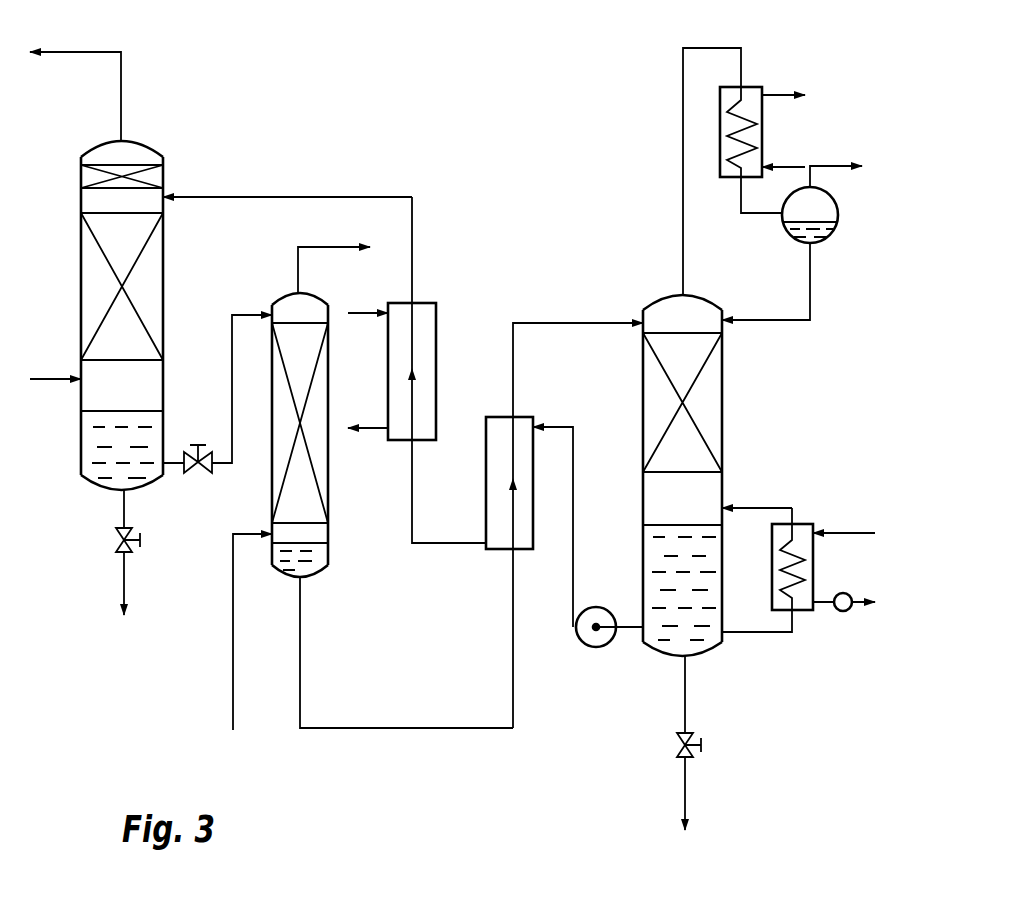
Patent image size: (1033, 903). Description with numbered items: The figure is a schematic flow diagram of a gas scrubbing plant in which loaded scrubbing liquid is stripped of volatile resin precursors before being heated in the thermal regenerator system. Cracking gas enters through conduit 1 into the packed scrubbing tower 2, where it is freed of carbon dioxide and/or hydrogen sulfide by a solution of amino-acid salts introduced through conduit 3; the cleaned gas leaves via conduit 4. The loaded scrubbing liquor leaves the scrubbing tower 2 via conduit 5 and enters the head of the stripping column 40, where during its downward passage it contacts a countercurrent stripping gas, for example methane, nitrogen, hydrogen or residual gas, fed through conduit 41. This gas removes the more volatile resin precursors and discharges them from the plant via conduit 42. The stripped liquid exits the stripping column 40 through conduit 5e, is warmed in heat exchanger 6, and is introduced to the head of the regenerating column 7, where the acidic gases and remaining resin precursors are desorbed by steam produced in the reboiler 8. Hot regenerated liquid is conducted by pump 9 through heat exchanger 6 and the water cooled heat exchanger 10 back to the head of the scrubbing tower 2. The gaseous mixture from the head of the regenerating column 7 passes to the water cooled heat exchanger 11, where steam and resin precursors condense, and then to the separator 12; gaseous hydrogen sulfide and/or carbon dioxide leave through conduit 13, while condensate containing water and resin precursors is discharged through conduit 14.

The conduit 1 is at (50, 380).
The scrubbing tower 2 is at (163, 268).
The conduit 3 is at (283, 197).
The conduit 4 is at (80, 52).
The conduit 5 is at (232, 386).
The conduit 5e is at (407, 730).
The heat exchanger 6 is at (486, 495).
The regenerating column 7 is at (722, 416).
The reboiler 8 is at (813, 557).
The pump 9 is at (588, 648).
The water cooled heat exchanger 10 is at (436, 355).
The water cooled heat exchanger 11 is at (762, 122).
The separator 12 is at (838, 212).
The conduit 13 is at (832, 164).
The conduit 14 is at (772, 318).
The stripping column 40 is at (328, 500).
The conduit 41 is at (233, 673).
The conduit 42 is at (337, 247).